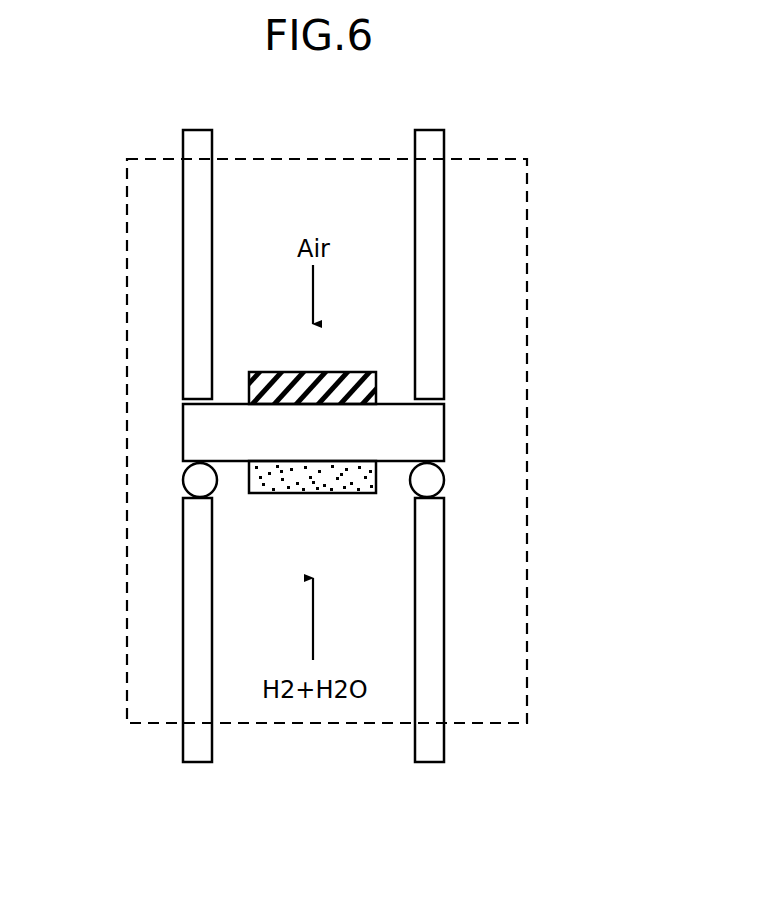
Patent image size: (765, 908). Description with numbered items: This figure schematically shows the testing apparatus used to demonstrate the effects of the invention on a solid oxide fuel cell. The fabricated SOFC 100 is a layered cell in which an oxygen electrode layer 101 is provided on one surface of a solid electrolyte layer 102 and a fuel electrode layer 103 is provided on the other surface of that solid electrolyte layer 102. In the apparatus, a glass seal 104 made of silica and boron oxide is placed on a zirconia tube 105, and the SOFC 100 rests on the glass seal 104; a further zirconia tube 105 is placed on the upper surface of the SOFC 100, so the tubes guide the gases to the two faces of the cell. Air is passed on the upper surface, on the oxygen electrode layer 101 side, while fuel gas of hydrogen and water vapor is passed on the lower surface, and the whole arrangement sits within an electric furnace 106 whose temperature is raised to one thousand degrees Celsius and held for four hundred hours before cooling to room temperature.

The SOFC 100 is at (426, 431).
The oxygen electrode layer 101 is at (376, 391).
The solid electrolyte layer 102 is at (433, 435).
The fuel electrode layer 103 is at (376, 480).
The glass seal 104 is at (194, 483).
The zirconia tube 105 is at (433, 591).
The electric furnace 106 is at (527, 246).